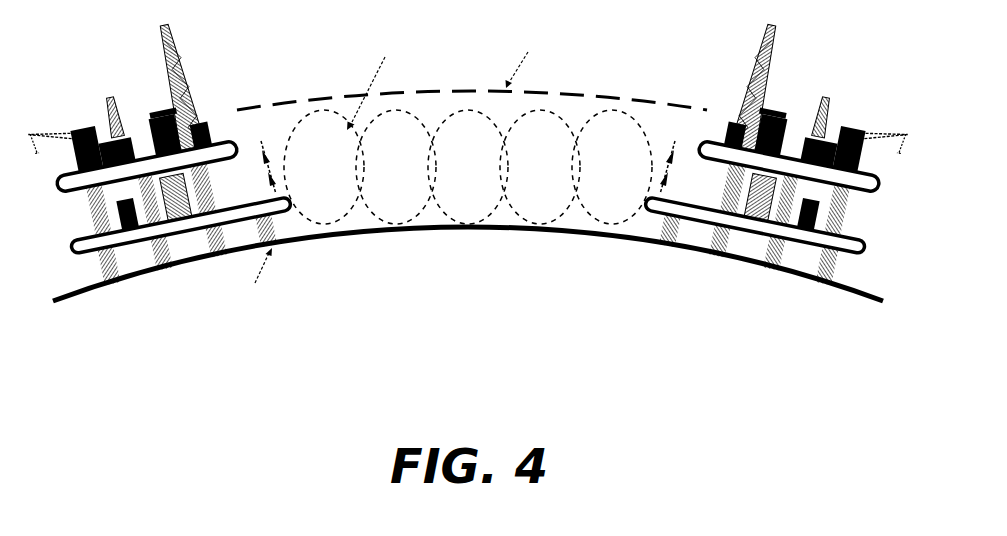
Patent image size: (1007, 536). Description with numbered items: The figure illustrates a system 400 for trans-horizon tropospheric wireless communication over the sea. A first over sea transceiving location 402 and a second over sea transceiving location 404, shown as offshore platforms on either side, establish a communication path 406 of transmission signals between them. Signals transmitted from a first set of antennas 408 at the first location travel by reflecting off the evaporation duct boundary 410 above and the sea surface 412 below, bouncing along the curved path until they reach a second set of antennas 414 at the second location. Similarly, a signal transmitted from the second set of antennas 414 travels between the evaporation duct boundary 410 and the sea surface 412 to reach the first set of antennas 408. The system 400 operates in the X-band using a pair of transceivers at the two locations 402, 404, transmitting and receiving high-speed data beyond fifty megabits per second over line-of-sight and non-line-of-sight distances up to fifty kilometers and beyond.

The system for trans-horizon tropospheric wireless communication 400 is at (655, 436).
The first over sea transceiving location 402 is at (88, 118).
The second over sea transceiving location 404 is at (803, 92).
The communication path 406 is at (486, 117).
The first set of antennas 408 is at (260, 172).
The evaporation duct boundary 410 is at (296, 90).
The sea surface 412 is at (542, 235).
The second set of antennas 414 is at (672, 178).